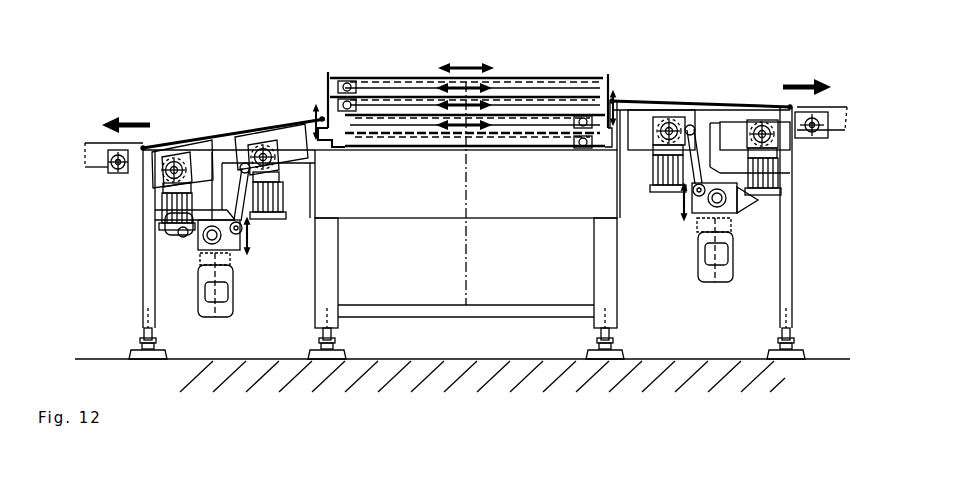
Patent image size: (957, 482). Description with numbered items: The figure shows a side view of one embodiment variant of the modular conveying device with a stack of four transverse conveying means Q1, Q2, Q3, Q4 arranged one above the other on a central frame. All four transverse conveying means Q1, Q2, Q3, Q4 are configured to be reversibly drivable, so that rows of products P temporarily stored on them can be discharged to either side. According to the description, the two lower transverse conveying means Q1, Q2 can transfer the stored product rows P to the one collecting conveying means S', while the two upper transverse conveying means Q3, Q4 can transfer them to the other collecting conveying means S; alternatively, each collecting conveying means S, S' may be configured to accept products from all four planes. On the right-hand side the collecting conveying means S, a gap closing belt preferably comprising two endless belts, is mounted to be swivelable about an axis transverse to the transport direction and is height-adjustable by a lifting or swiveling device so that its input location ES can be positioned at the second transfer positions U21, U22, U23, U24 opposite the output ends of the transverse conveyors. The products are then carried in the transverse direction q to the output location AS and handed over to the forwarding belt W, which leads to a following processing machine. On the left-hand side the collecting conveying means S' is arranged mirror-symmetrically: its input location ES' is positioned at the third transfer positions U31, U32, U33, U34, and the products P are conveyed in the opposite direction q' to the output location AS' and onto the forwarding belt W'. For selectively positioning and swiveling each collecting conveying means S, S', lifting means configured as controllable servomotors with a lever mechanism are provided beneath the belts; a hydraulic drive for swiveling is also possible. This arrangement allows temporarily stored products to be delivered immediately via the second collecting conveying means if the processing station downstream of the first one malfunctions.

The forwarding belt W' is at (92, 127).
The opposite direction to transverse direction q' is at (126, 114).
The output location of collecting conveying means S' AS' is at (158, 111).
The collecting conveying means S' is at (234, 199).
The input location of collecting conveying means S' ES' is at (278, 85).
The third transfer position U32 is at (311, 103).
The third transfer position U33 is at (322, 88).
The third transfer position U34 is at (331, 66).
The third transfer position U31 is at (331, 150).
The products P is at (383, 135).
The transverse conveying means Q1 is at (538, 143).
The transverse conveying means Q2 is at (553, 125).
The transverse conveying means Q3 is at (560, 107).
The transverse conveying means Q4 is at (572, 90).
The second transfer position U24 is at (608, 64).
The second transfer position U23 is at (615, 82).
The second transfer position U22 is at (591, 148).
The second transfer position U21 is at (607, 140).
The input location of collecting conveying means S ES is at (644, 81).
The collecting conveying means S is at (701, 186).
The output location of collecting conveying means S AS is at (772, 75).
The transverse direction q is at (808, 76).
The forwarding belt W is at (835, 86).